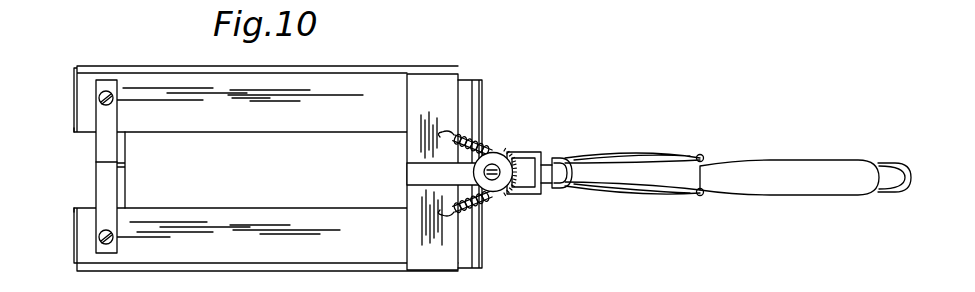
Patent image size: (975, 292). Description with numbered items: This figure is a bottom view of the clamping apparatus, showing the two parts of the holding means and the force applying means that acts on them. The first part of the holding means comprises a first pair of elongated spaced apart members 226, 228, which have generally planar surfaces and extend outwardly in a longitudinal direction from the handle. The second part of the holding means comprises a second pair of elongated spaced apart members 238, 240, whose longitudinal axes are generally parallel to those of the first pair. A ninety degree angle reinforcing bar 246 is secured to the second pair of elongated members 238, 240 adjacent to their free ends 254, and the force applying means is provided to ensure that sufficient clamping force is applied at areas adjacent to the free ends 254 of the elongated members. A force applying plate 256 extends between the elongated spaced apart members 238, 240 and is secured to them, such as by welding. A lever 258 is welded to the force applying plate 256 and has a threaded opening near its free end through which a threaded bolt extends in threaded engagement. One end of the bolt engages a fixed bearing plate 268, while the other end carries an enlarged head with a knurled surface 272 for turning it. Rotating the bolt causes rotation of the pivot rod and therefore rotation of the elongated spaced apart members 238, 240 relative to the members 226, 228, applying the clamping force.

The elongated spaced apart member 226 is at (237, 242).
The elongated spaced apart member 228 is at (240, 87).
The elongated spaced apart member 238 is at (350, 251).
The elongated spaced apart member 240 is at (343, 129).
The 90 degree angle reinforcing bar 246 is at (107, 191).
The free ends 254 is at (88, 202).
The force applying plate 256 is at (450, 109).
The lever 258 is at (418, 176).
The fixed bearing plate 268 is at (530, 152).
The knurled surface 272 is at (510, 190).